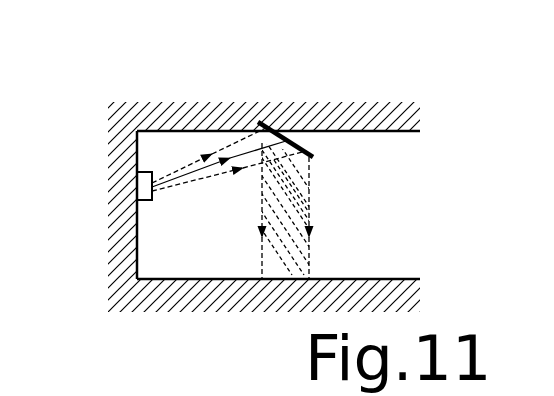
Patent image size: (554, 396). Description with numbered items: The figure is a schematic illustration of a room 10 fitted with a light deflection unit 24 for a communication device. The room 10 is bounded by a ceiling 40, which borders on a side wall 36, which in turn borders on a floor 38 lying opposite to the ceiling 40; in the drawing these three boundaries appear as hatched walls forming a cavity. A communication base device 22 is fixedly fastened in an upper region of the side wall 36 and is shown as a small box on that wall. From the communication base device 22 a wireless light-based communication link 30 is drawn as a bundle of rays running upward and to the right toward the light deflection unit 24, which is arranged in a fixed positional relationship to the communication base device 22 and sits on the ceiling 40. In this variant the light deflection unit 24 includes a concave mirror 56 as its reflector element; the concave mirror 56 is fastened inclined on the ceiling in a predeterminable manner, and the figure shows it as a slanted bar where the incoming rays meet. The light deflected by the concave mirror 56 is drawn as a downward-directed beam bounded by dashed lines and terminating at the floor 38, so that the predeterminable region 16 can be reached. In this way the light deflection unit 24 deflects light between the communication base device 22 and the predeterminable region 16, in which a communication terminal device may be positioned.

The room 10 is at (381, 103).
The ceiling 40 is at (395, 132).
The side wall 36 is at (126, 224).
The floor 38 is at (400, 285).
The communication base device 22 is at (134, 184).
The light deflection unit 24 is at (293, 128).
The wireless light-based communication link 30 is at (243, 127).
The concave mirror 56 is at (316, 158).
The predeterminable region 16 is at (282, 257).